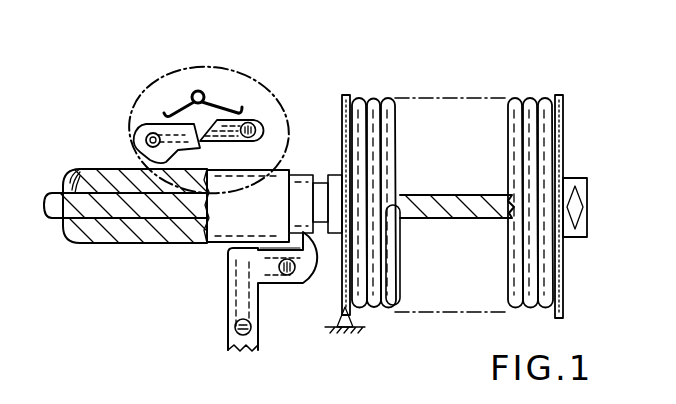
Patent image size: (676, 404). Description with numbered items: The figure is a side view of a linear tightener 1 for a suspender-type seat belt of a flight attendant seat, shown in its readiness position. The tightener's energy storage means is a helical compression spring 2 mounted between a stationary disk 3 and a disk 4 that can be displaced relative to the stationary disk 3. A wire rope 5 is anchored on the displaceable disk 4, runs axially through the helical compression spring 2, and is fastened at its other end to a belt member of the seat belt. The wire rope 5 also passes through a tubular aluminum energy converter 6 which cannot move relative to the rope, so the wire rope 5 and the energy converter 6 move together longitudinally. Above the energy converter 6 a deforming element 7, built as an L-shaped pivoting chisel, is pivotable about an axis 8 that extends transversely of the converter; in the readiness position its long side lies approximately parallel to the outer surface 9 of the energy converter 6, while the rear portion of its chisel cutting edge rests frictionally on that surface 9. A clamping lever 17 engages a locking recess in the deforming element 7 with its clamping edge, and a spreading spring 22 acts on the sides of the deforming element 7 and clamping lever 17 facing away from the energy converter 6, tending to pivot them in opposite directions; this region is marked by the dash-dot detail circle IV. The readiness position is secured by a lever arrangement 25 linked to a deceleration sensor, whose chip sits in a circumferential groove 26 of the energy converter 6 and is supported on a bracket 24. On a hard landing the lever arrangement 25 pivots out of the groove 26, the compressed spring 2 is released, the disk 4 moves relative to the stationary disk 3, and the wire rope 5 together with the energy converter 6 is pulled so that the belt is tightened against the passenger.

The linear tightener 1 is at (430, 96).
The helical compression spring 2 is at (467, 97).
The stationary disk 3 is at (342, 292).
The displaceable disk 4 is at (565, 140).
The wire rope 5 is at (450, 194).
The energy converter 6 is at (88, 250).
The deforming element 7 is at (147, 123).
The axis 8 is at (146, 135).
The outer surface 9 is at (90, 166).
The clamping lever 17 is at (272, 108).
The spreading spring 22 is at (198, 82).
The bracket 24 is at (226, 292).
The lever arrangement 25 is at (300, 274).
The circumferential groove 26 is at (316, 178).
The detail region IV is at (233, 78).